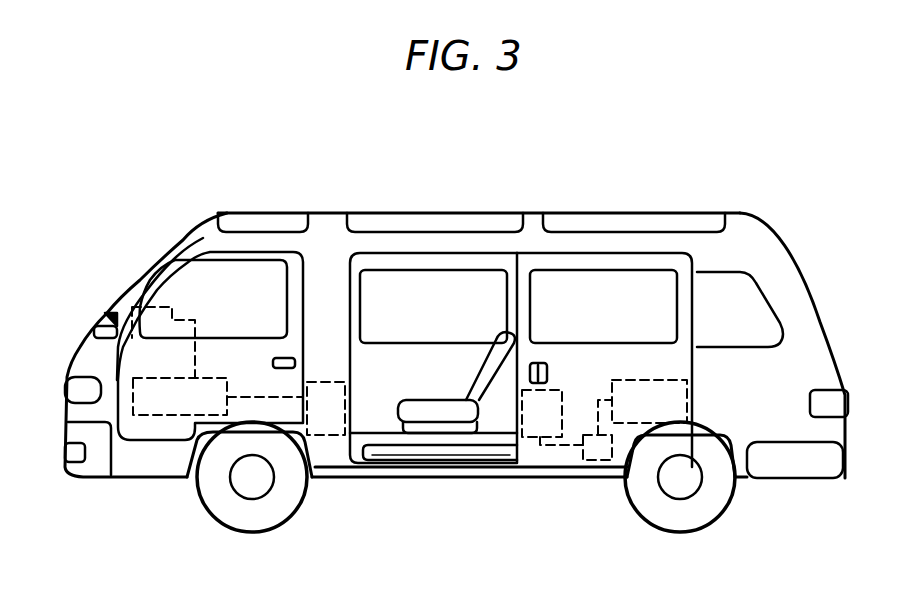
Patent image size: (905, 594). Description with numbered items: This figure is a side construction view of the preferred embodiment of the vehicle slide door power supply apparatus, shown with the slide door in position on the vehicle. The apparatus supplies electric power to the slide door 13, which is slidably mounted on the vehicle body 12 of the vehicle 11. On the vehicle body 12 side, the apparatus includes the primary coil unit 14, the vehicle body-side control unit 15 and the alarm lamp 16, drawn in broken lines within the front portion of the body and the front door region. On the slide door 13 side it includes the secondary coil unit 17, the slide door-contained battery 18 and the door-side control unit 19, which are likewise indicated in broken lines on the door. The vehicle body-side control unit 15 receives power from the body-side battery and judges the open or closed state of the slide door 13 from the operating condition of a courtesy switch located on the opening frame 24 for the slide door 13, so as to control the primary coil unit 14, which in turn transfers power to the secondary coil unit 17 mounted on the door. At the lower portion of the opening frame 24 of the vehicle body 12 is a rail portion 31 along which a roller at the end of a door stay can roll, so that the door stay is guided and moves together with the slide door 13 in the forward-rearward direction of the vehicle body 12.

The vehicle 11 is at (783, 237).
The vehicle body 12 is at (160, 446).
The slide door 13 is at (617, 253).
The primary coil unit 14 is at (327, 422).
The vehicle body-side control unit 15 is at (140, 378).
The alarm lamp 16 is at (118, 315).
The secondary coil unit 17 is at (531, 445).
The slide door-contained battery 18 is at (597, 460).
The door-side control unit 19 is at (660, 402).
The opening frame 24 is at (356, 262).
The rail portion 31 is at (436, 458).